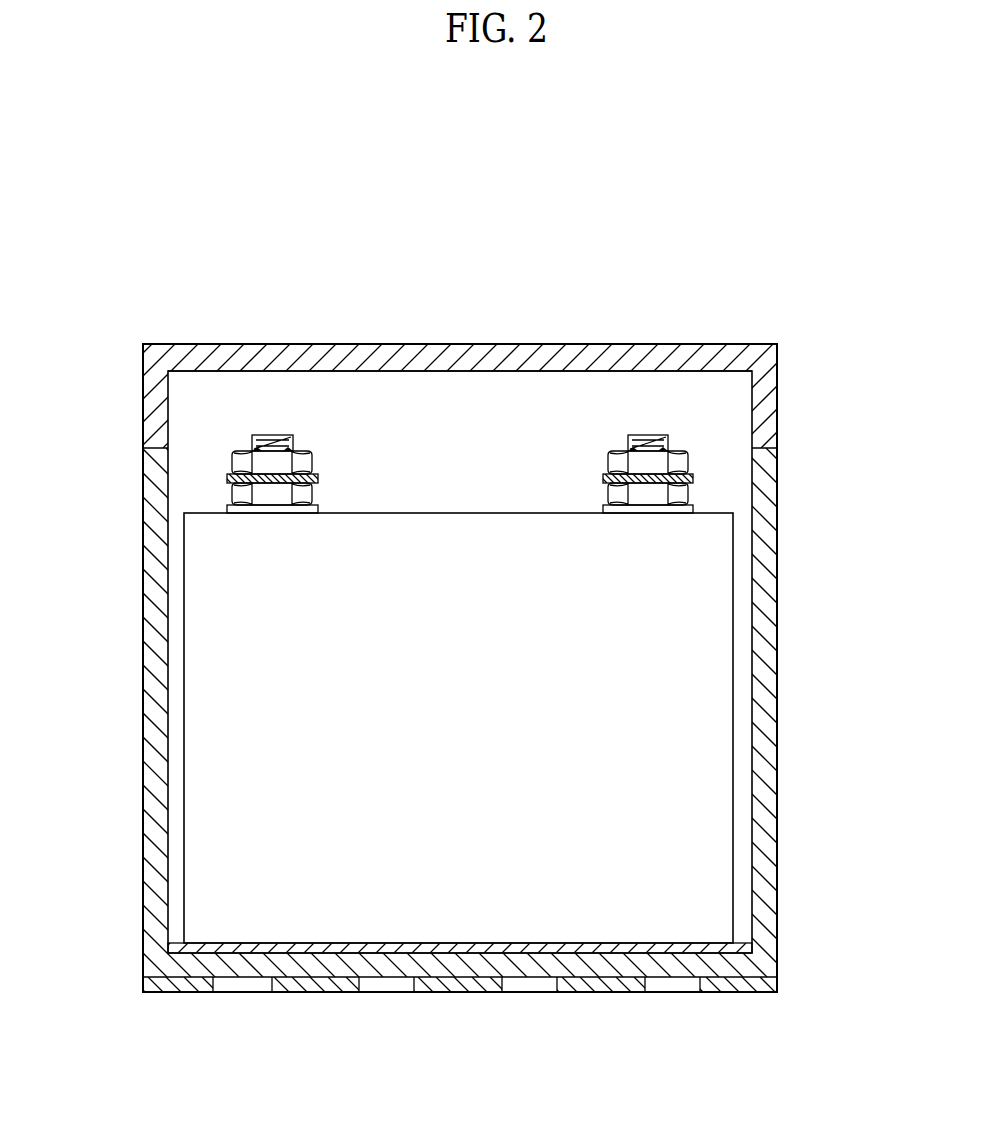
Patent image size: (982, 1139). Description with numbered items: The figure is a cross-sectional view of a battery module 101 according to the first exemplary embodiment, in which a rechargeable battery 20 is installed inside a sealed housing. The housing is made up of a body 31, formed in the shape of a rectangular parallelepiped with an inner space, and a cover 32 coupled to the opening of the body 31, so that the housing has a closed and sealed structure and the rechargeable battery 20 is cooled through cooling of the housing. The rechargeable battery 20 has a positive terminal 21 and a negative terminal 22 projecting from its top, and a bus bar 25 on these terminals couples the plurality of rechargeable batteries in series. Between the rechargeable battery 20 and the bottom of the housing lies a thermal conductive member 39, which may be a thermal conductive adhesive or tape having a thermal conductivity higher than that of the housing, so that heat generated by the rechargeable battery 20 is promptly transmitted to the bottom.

The battery module 101 is at (488, 266).
The rechargeable battery 20 is at (176, 784).
The positive terminal 21 is at (276, 435).
The negative terminal 22 is at (656, 435).
The bus bar 25 is at (693, 478).
The body 31 is at (763, 649).
The cover 32 is at (424, 362).
The thermal conductive member 39 is at (605, 948).